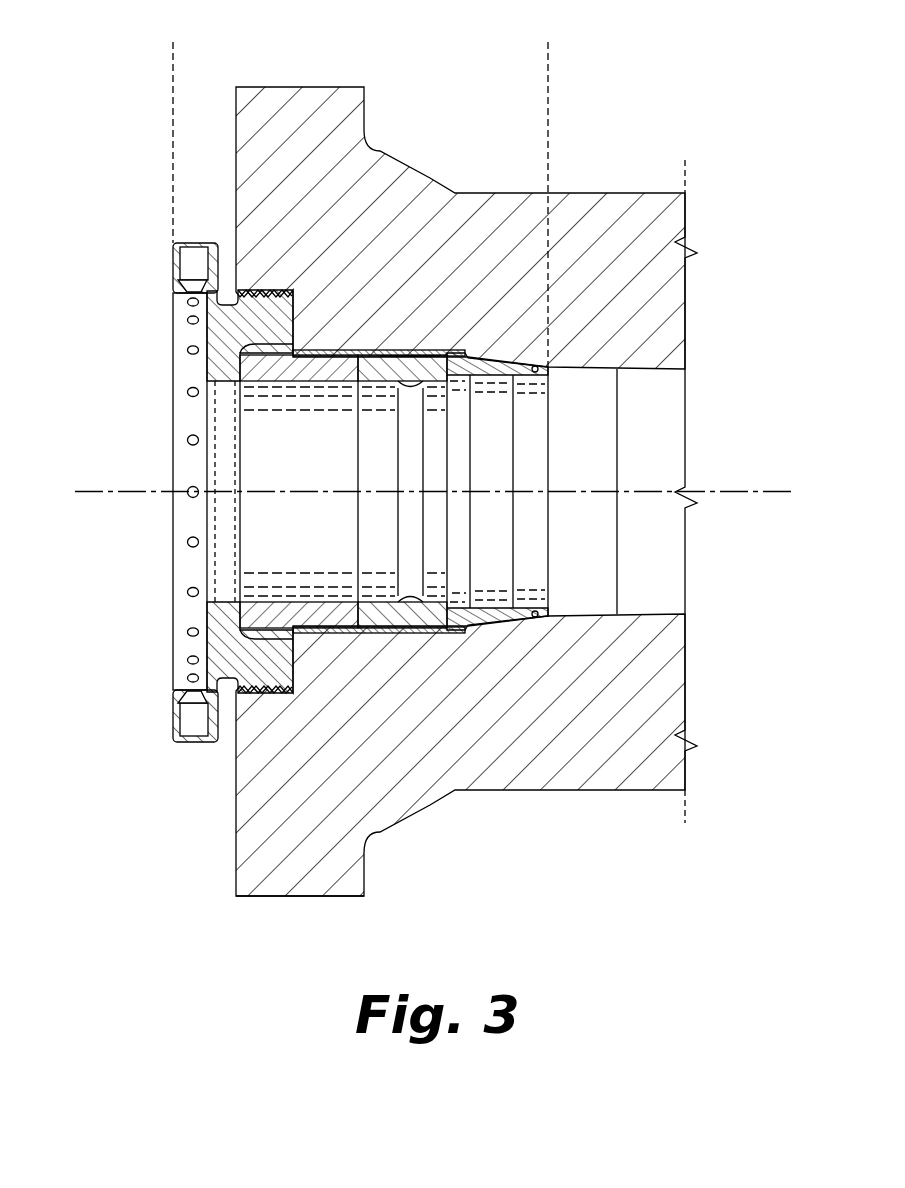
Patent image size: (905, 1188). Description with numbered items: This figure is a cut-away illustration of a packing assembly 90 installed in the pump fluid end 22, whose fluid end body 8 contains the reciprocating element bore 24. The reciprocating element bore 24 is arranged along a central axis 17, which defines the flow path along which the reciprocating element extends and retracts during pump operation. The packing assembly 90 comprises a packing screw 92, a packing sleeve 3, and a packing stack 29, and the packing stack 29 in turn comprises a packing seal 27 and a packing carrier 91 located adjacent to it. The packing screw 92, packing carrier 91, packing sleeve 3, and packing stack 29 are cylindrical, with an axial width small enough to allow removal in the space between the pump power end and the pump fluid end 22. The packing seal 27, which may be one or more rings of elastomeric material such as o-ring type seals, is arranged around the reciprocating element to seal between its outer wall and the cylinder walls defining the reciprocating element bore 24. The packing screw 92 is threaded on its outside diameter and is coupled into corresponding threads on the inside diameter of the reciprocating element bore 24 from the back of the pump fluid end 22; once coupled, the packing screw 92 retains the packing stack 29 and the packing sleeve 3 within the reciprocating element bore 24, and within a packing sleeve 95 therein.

The packing assembly 90 is at (545, 42).
The packing stack 29 is at (400, 218).
The packing carrier 91 is at (279, 358).
The packing seal 27 is at (409, 358).
The packing screw 92 is at (220, 326).
The reciprocating element bore 24 is at (570, 372).
The central axis 17 is at (733, 490).
The packing sleeve 95 is at (645, 543).
The packing sleeve 3 is at (367, 632).
The fluid end body 8 is at (573, 733).
The pump fluid end 22 is at (531, 866).